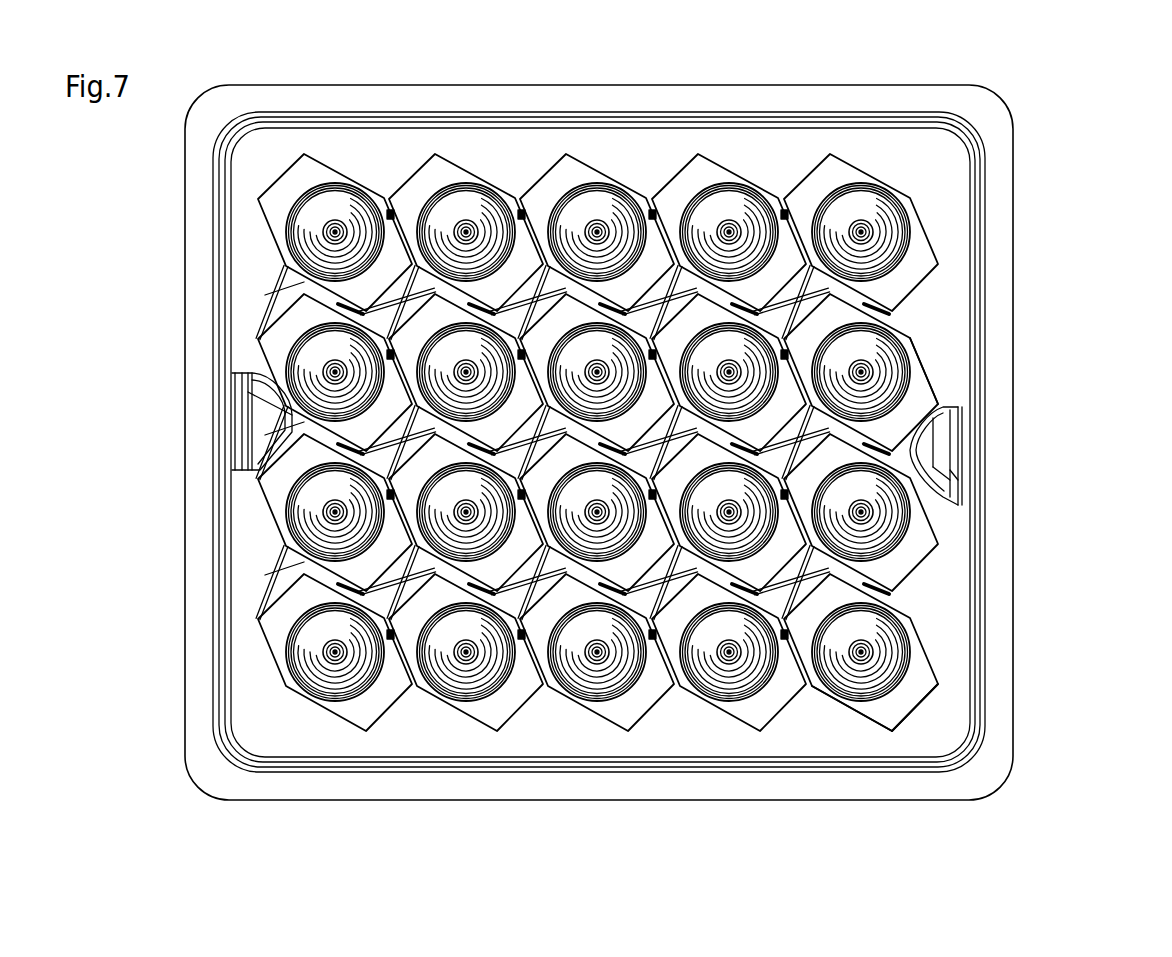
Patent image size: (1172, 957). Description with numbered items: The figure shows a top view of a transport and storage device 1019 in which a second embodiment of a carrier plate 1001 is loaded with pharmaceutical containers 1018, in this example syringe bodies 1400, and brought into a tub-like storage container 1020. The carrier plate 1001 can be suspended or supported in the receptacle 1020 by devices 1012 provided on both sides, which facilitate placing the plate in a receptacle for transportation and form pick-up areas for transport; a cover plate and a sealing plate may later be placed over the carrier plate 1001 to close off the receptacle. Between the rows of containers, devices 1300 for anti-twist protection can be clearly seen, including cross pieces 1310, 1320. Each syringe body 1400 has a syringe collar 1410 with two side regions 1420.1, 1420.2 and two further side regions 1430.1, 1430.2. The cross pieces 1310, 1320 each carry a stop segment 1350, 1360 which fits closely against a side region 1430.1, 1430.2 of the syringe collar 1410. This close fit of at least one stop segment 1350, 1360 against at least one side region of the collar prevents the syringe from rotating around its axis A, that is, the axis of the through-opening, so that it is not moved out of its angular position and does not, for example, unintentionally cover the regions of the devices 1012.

The transport and storage device 1019 is at (1028, 117).
The carrier plate 1001 is at (931, 196).
The pharmaceutical container 1018 is at (908, 260).
The cross piece 1310 is at (890, 308).
The device for anti-twist protection 1300 is at (803, 305).
The syringe body 1400 is at (915, 362).
The axis A is at (910, 380).
The stop segment 1360 is at (943, 407).
The device 1012 is at (962, 438).
The tub-like storage container 1020 is at (983, 475).
The stop segment 1350 is at (760, 247).
The cross piece 1320 is at (806, 279).
The side region 1420.1 is at (908, 616).
The syringe collar 1410 is at (915, 667).
The side region 1430.1 is at (820, 692).
The side region 1420.2 is at (850, 710).
The side region 1430.2 is at (876, 728).